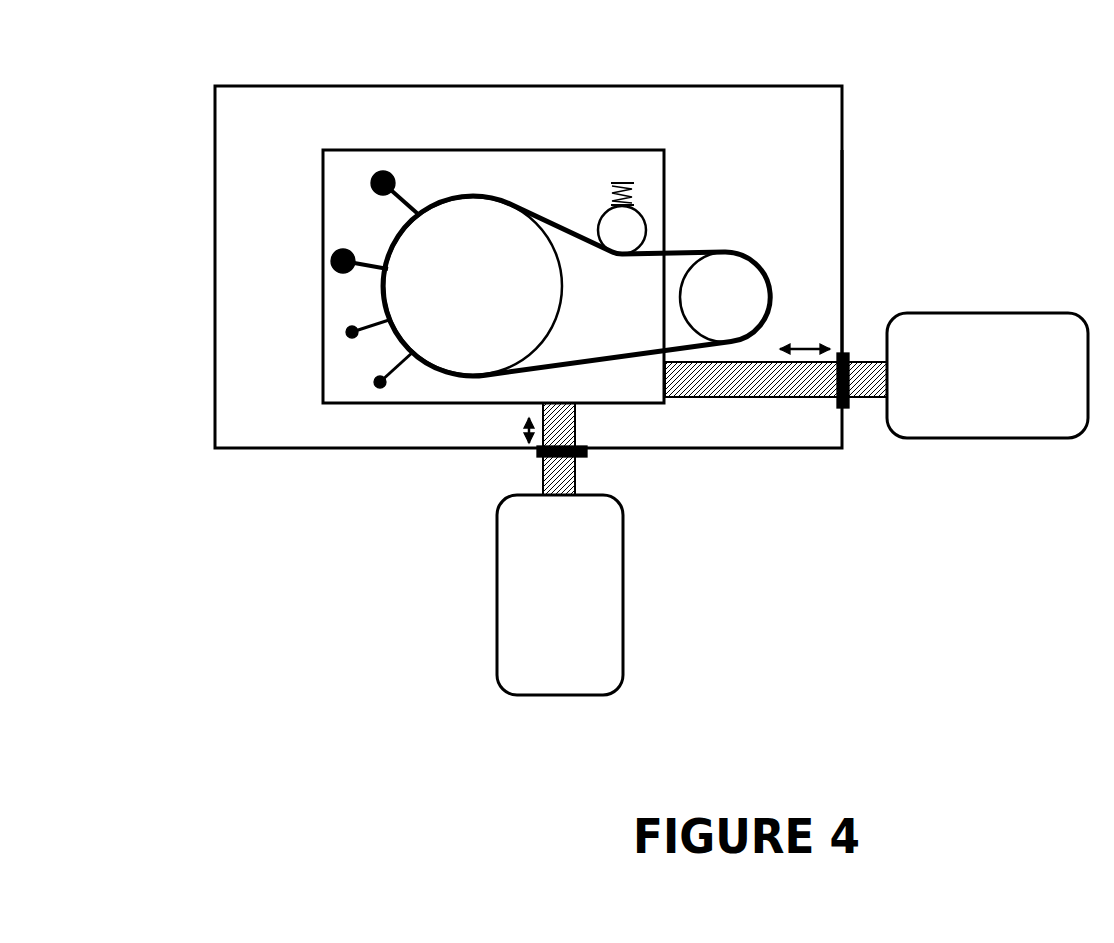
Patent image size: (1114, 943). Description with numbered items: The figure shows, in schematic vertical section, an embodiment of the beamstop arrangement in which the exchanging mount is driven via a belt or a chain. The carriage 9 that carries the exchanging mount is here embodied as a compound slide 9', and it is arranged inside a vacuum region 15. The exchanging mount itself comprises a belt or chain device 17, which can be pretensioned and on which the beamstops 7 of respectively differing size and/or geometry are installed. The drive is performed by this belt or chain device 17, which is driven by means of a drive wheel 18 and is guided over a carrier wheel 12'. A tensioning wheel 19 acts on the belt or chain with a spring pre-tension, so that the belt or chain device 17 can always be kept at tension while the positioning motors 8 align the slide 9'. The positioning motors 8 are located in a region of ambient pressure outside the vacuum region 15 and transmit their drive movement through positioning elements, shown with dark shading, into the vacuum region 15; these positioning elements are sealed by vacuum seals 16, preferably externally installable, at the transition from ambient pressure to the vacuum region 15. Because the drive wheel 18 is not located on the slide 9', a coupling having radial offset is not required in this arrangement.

The beamstops 7 is at (372, 182).
The positioning motor 8 is at (970, 406).
The carriage 9 is at (859, 276).
The compound slide 9' is at (407, 337).
The carrier wheel 12' is at (432, 202).
The vacuum region 15 is at (795, 127).
The vacuum seals 16 is at (840, 403).
The belt or chain device 17 is at (565, 375).
The drive wheel 18 is at (731, 270).
The tensioning wheel 19 is at (607, 230).